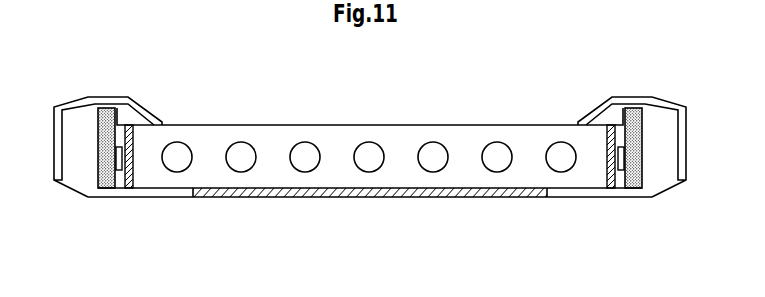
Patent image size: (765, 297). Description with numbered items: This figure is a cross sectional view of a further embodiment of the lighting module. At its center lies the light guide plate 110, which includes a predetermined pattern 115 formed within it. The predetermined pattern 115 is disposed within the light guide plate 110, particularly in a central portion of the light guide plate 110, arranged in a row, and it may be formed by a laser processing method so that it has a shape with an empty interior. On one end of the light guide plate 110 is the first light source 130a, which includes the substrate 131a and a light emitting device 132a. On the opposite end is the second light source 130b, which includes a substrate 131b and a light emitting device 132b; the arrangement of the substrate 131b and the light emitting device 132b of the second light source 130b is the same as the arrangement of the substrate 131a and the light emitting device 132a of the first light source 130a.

The light guide plate 110 is at (407, 140).
The predetermined pattern 115 is at (304, 142).
The first light source 130a is at (650, 247).
The second light source 130b is at (177, 249).
The substrate 131a is at (640, 188).
The substrate 131b is at (105, 188).
The light emitting device 132a is at (622, 170).
The light emitting device 132b is at (118, 170).